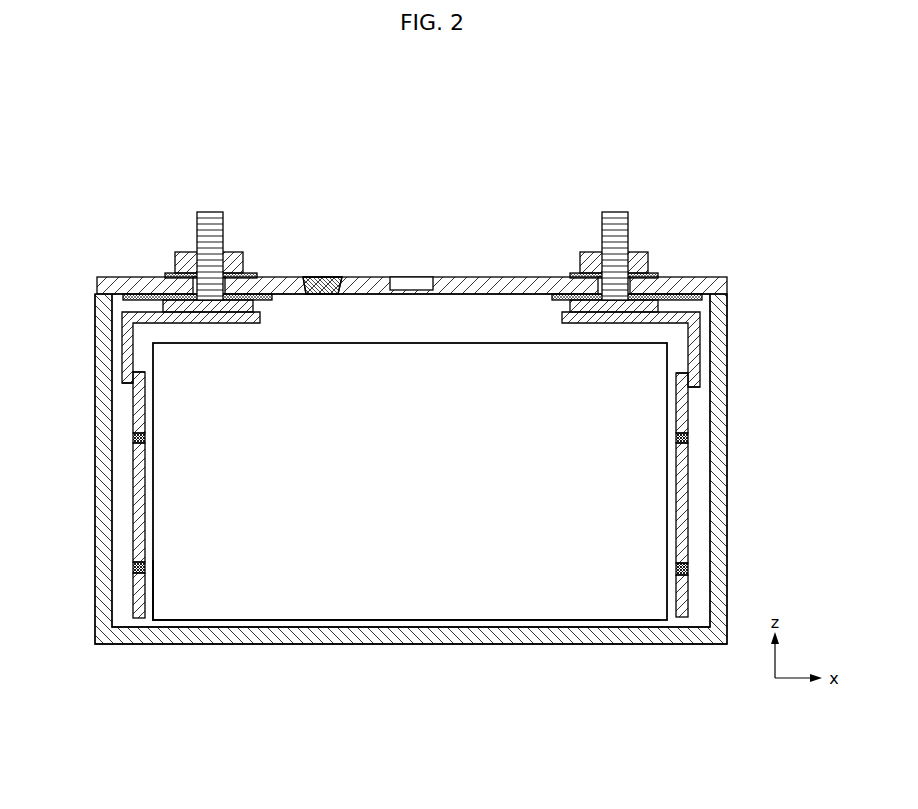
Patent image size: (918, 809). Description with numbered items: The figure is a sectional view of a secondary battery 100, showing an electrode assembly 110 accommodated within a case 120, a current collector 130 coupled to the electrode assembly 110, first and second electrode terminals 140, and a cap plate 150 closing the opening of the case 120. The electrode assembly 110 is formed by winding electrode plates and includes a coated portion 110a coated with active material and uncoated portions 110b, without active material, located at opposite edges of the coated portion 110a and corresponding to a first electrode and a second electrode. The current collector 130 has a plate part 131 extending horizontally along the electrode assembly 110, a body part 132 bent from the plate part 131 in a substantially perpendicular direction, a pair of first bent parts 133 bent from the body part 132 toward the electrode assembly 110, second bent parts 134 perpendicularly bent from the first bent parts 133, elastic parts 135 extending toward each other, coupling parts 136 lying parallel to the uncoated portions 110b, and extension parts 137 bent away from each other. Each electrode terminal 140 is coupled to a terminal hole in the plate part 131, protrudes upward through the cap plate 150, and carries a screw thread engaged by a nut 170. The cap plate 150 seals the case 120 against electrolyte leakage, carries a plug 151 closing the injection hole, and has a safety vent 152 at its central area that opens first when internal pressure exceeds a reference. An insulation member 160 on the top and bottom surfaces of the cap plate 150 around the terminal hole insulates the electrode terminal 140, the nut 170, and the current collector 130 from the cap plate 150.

The secondary battery 100 is at (758, 186).
The electrode assembly 110 is at (272, 626).
The coated portion 110a is at (452, 618).
The uncoated portions 110b is at (144, 616).
The case 120 is at (600, 637).
The current collector 130 is at (702, 350).
The plate part 131 is at (146, 303).
The body part 132 is at (128, 343).
The first bent parts 133 is at (126, 390).
The second bent parts 134 is at (138, 408).
The elastic parts 135 is at (138, 438).
The coupling parts 136 is at (138, 505).
The extension parts 137 is at (138, 568).
The electrode terminal 140 is at (209, 212).
The cap plate 150 is at (722, 285).
The plug 151 is at (322, 284).
The safety vent 152 is at (410, 284).
The insulation member 160 is at (656, 273).
The nut 170 is at (588, 252).